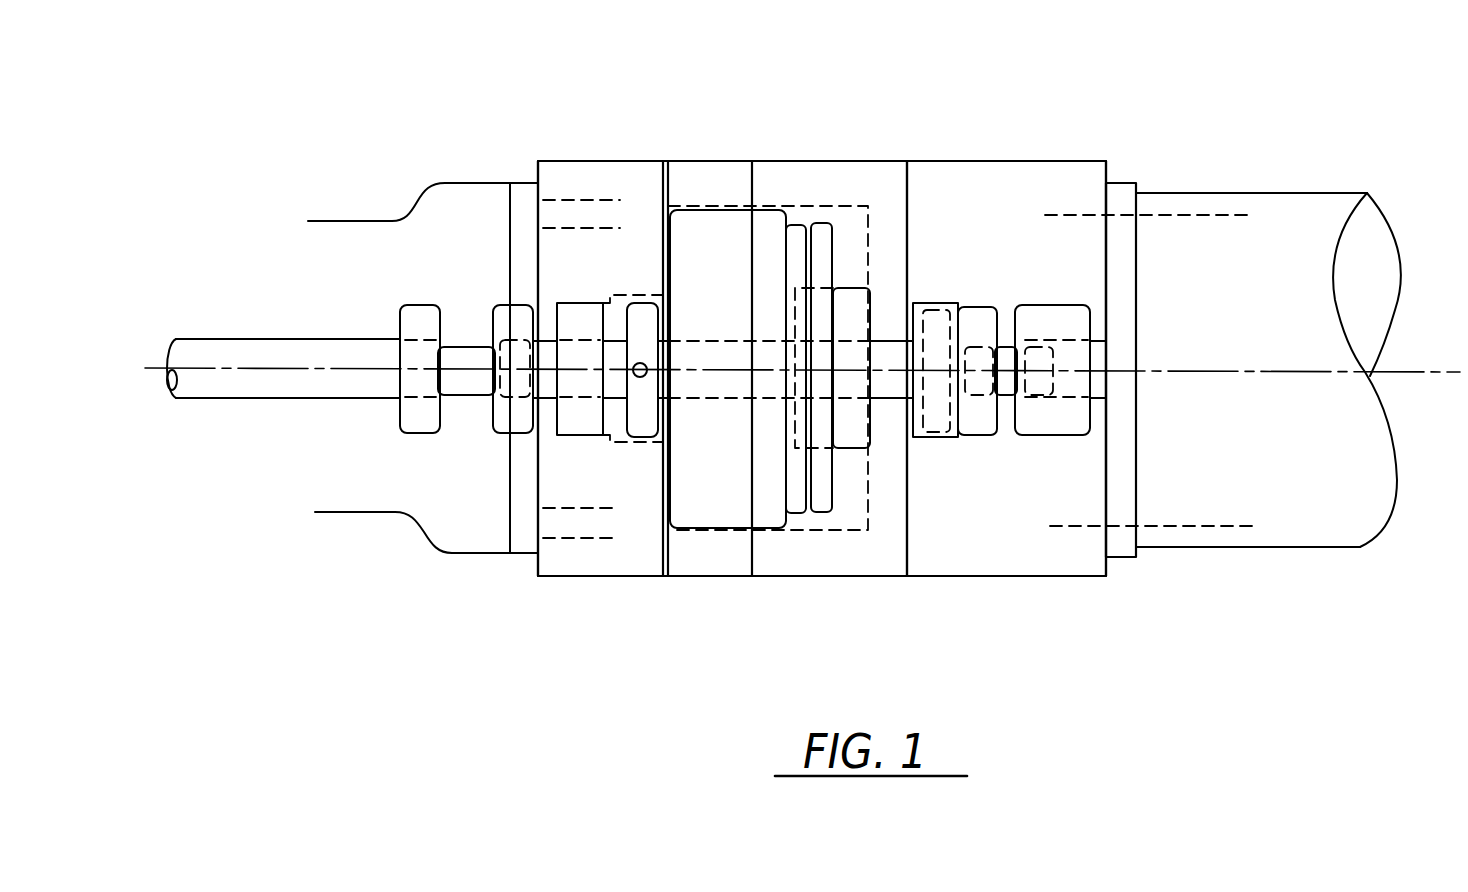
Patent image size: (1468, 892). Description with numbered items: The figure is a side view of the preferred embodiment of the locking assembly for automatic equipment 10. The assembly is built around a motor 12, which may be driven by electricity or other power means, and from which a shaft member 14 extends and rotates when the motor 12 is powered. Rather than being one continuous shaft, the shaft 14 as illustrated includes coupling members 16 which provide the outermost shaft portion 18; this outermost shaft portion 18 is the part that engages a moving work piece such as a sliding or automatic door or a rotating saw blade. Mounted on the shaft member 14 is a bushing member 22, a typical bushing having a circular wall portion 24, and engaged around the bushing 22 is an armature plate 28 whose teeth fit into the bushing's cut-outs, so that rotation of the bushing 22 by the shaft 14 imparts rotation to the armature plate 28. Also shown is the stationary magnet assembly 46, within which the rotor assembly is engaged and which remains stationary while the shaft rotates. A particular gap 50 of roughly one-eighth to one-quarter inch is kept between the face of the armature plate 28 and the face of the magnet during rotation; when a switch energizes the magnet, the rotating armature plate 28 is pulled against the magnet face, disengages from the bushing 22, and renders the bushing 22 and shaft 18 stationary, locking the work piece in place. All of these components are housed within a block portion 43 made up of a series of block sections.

The locking assembly for automatic equipment 10 is at (1097, 106).
The motor 12 is at (1302, 499).
The shaft member 14 is at (946, 372).
The coupling members 16 is at (528, 422).
The outermost shaft portion 18 is at (293, 368).
The bushing member 22 is at (848, 440).
The circular wall portion 24 is at (847, 288).
The armature plate 28 is at (825, 502).
The block portion 43 is at (1033, 580).
The magnet assembly 46 is at (647, 517).
The gap 50 is at (807, 250).